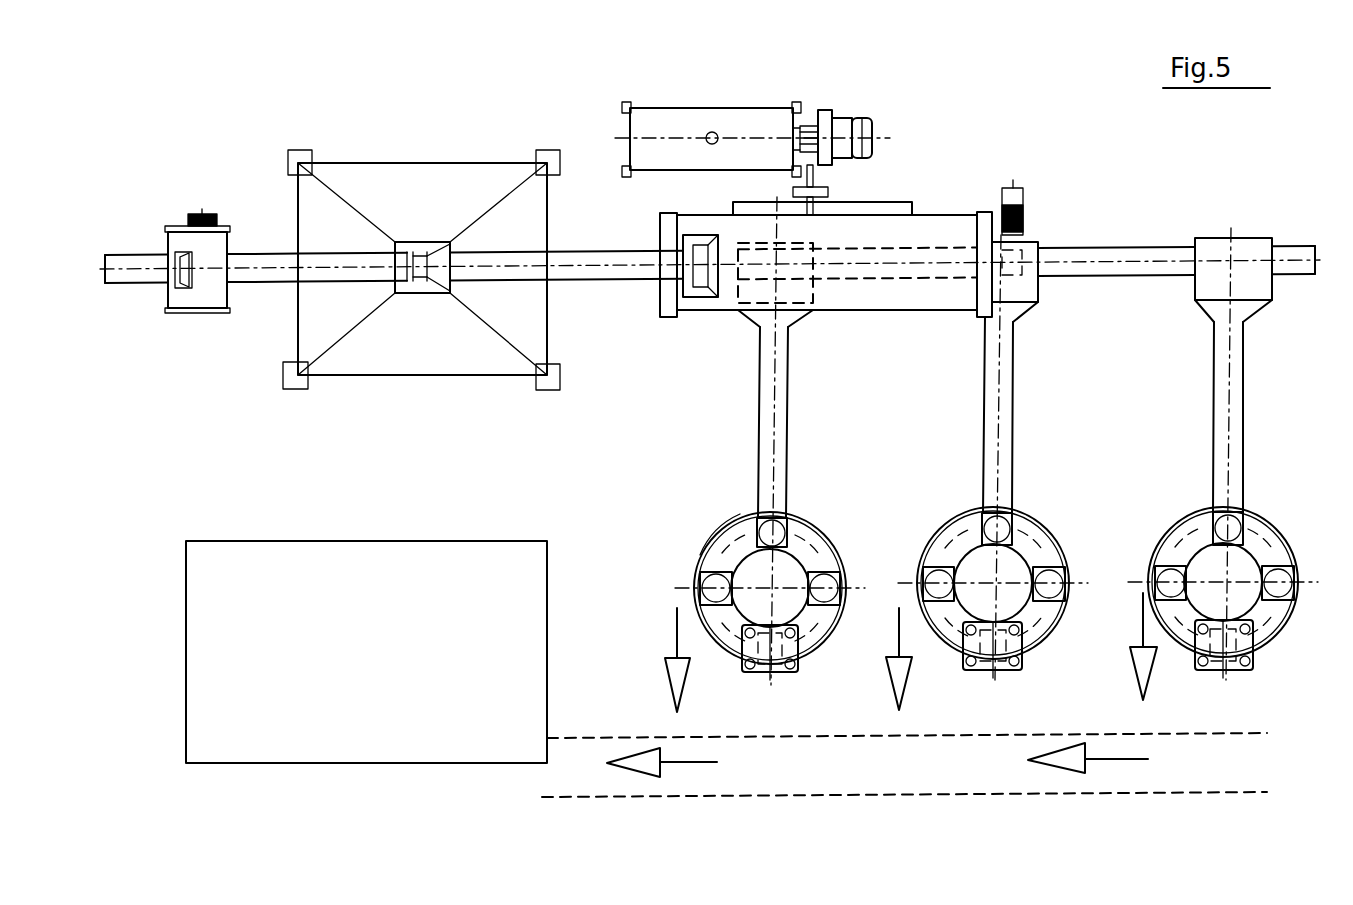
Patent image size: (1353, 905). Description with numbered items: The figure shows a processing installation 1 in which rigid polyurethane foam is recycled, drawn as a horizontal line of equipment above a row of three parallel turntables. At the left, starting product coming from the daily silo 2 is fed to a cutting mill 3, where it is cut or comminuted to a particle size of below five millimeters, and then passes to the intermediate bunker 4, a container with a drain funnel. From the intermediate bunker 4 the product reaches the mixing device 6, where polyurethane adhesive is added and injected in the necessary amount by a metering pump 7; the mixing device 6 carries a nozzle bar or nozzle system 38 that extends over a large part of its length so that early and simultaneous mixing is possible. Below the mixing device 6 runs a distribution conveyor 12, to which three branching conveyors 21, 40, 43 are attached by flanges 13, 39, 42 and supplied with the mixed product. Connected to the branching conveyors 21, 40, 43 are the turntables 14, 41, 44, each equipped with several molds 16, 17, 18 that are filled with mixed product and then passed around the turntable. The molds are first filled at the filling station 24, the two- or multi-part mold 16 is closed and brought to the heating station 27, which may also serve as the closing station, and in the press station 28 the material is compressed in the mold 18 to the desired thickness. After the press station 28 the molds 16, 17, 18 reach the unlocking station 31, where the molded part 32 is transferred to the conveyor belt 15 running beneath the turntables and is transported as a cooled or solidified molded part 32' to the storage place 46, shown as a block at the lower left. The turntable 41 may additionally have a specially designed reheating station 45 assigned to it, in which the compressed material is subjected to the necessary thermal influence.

The processing installation 1 is at (200, 440).
The daily silo 2 is at (100, 272).
The cutting mill 3 is at (200, 290).
The intermediate bunker 4 is at (399, 345).
The mixing device 6 is at (987, 254).
The metering pump 7 is at (850, 118).
The distribution conveyor 12 is at (1115, 250).
The flange 13 is at (762, 327).
The turntable 14 is at (828, 537).
The conveyor belt 15 is at (775, 773).
The mold 16 is at (788, 515).
The mold 17 is at (832, 600).
The mold 18 is at (770, 650).
The branching conveyor 21 is at (763, 396).
The filling station 24 is at (750, 517).
The heating station 27 is at (840, 570).
The press station 28 is at (790, 667).
The unlocking station 31 is at (696, 575).
The molded part 32 is at (877, 652).
The cooled or solidified molded part 32' is at (873, 809).
The nozzle bar or nozzle system 38 is at (902, 198).
The flange 39 is at (1013, 312).
The branching conveyor 40 is at (1013, 402).
The turntable 41 is at (1033, 513).
The flange 42 is at (1263, 300).
The branching conveyor 43 is at (1243, 398).
The turntable 44 is at (1265, 513).
The reheating station 45 is at (712, 602).
The storage place 46 is at (430, 712).